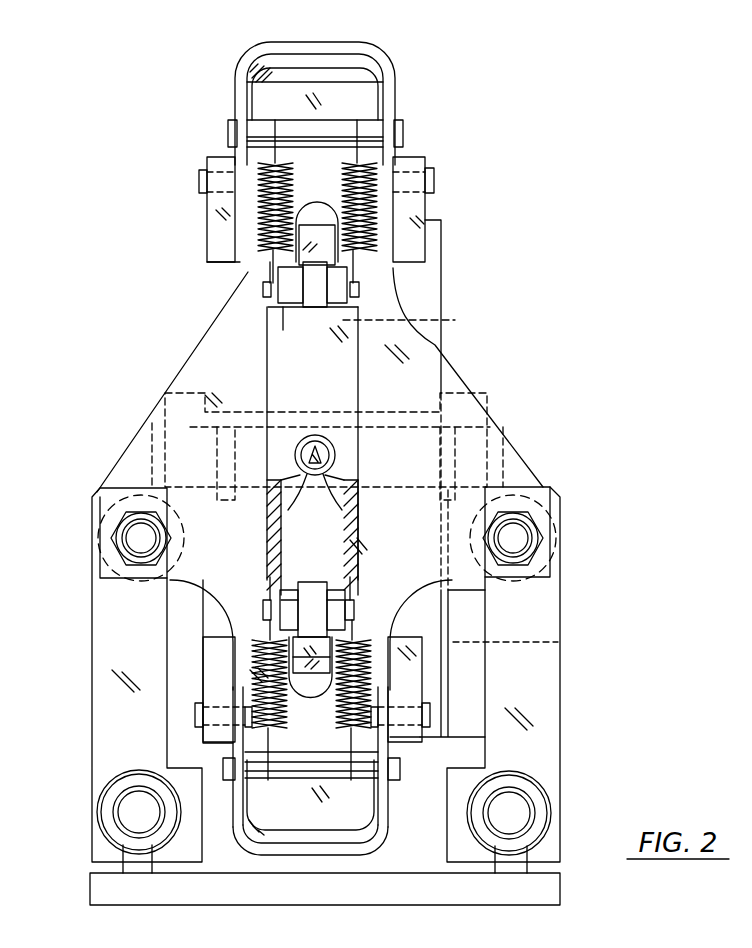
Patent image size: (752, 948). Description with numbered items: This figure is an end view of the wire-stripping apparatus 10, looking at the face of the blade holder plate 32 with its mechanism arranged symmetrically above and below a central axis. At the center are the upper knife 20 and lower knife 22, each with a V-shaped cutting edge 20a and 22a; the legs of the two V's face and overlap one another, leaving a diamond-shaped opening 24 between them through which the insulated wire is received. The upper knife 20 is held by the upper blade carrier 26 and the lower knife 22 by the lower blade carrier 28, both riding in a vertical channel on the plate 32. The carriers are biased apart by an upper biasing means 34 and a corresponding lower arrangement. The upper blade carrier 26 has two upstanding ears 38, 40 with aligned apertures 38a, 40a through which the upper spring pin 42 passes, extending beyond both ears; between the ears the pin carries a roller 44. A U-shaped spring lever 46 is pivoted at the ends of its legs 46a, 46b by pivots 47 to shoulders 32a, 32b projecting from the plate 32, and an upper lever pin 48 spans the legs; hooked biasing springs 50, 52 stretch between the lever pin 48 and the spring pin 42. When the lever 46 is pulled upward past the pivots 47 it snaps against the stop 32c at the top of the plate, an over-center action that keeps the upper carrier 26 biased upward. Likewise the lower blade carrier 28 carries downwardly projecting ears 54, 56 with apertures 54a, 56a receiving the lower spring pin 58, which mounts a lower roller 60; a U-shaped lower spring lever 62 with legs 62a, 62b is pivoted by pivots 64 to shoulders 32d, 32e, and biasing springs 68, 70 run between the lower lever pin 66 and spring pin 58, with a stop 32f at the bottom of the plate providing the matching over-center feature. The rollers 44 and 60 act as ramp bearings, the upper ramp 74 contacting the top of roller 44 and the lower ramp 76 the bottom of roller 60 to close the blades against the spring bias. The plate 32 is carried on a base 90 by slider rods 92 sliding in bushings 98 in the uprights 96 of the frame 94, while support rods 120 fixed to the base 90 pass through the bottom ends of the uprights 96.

The apparatus 10 is at (123, 395).
The upper knife 20 is at (330, 443).
The cutting edge 20a is at (297, 452).
The lower knife 22 is at (340, 498).
The cutting edge 22a is at (303, 498).
The diamond-shaped opening 24 is at (335, 454).
The upper blade carrier 26 is at (270, 267).
The lower blade carrier 28 is at (300, 532).
The blade holder plate 32 is at (442, 360).
The shoulder 32a is at (425, 231).
The shoulder 32b is at (207, 204).
The stop 32c is at (385, 64).
The shoulder 32d is at (432, 656).
The shoulder 32e is at (203, 662).
The stop 32f is at (322, 800).
The upper biasing means 34 is at (432, 130).
The ear 38 is at (350, 268).
The aperture 38a is at (455, 320).
The ear 40 is at (288, 326).
The aperture 40a is at (293, 313).
The upper spring pin 42 is at (263, 288).
The roller 44 is at (318, 308).
The U-shaped spring lever 46 is at (320, 105).
The leg 46a is at (397, 205).
The leg 46b is at (237, 94).
The pivot 47 is at (200, 178).
The upper lever pin 48 is at (407, 124).
The biasing spring 50 is at (372, 247).
The biasing spring 52 is at (258, 228).
The ear 54 is at (355, 625).
The aperture 54a is at (352, 585).
The ear 56 is at (262, 630).
The aperture 56a is at (263, 577).
The lower spring pin 58 is at (263, 608).
The lower roller 60 is at (310, 581).
The U-shaped lower spring lever 62 is at (318, 858).
The leg 62a is at (390, 806).
The leg 62b is at (238, 790).
The pivot 64 is at (195, 716).
The lower lever pin 66 is at (400, 774).
The biasing spring 68 is at (367, 657).
The biasing spring 70 is at (260, 647).
The upper ramp 74 is at (314, 235).
The lower ramp 76 is at (313, 672).
The base 90 is at (558, 877).
The slider rod 92 is at (130, 537).
The frame 94 is at (500, 740).
The upright 96 is at (92, 682).
The bushing 98 is at (127, 582).
The support rod 120 is at (128, 813).